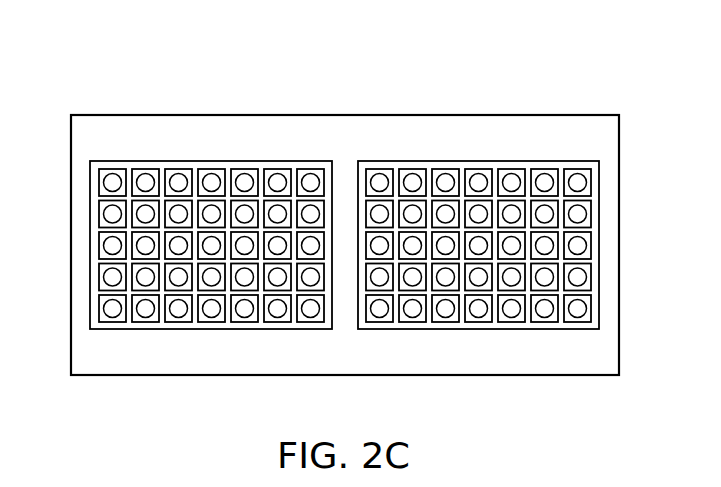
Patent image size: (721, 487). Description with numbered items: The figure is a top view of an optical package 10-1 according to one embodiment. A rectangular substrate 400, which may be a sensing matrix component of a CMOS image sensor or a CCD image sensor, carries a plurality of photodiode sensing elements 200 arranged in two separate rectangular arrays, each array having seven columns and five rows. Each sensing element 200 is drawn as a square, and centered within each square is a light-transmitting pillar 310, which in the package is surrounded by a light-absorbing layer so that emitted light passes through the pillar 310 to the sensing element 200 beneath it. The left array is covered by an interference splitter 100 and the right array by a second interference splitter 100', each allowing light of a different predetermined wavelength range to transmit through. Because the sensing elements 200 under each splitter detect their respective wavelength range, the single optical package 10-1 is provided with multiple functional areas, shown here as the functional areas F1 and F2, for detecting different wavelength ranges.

The optical package 10-1 is at (78, 45).
The interference splitter 100 is at (211, 203).
The interference splitter 100' is at (478, 202).
The sensing element 200 is at (98, 178).
The light-transmitting pillar 310 is at (144, 174).
The substrate 400 is at (619, 170).
The functional area F1 is at (247, 133).
The functional area F2 is at (507, 147).